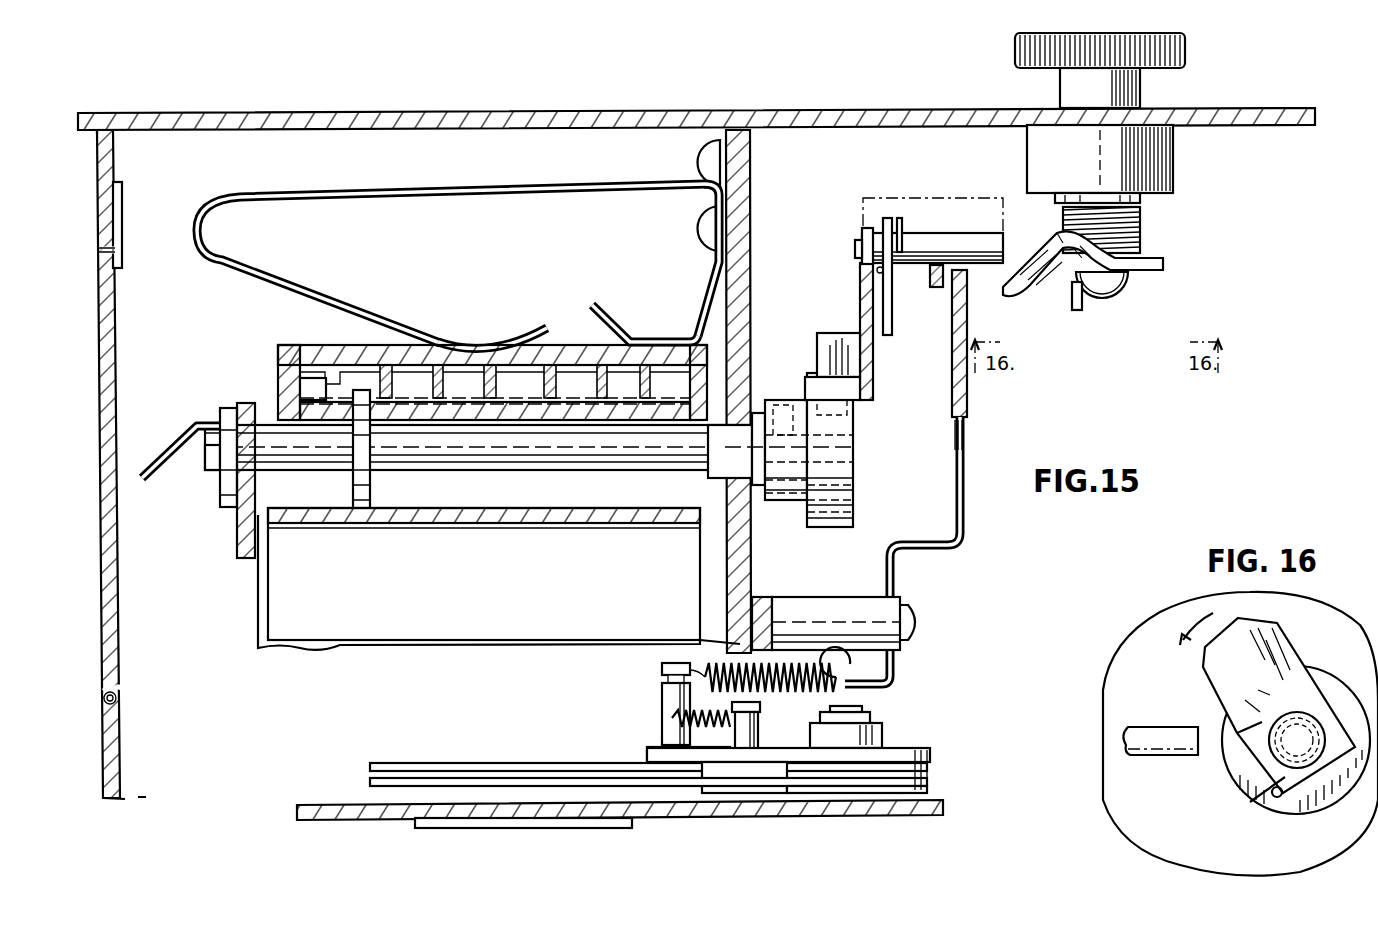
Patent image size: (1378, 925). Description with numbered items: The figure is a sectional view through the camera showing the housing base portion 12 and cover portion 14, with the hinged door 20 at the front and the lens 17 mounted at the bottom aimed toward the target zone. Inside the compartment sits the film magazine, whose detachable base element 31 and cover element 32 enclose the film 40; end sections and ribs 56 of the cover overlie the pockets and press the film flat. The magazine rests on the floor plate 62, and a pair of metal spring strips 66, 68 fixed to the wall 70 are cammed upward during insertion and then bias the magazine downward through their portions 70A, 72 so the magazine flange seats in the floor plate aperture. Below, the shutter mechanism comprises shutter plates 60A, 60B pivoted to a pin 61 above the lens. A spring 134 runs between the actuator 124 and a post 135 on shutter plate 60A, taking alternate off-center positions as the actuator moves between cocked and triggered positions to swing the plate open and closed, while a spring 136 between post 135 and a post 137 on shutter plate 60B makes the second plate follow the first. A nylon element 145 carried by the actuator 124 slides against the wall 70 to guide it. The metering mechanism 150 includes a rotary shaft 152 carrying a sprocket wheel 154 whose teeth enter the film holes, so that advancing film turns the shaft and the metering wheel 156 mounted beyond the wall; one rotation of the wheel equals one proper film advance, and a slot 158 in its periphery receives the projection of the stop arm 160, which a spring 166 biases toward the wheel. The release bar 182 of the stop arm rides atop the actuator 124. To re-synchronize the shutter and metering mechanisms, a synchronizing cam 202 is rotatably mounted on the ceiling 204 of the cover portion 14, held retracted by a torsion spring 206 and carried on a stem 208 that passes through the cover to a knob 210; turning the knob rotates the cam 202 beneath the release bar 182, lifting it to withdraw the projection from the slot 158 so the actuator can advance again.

In FIG. 15, the base portion 12 is at (96, 211).
In FIG. 15, the cover portion 14 is at (560, 106).
In FIG. 15, the lens 17 is at (642, 820).
In FIG. 15, the hinged door 20 is at (100, 476).
In FIG. 15, the base element 31 is at (314, 348).
In FIG. 15, the cover element 32 is at (282, 372).
In FIG. 15, the film 40 is at (507, 440).
In FIG. 15, the cover end sections and ribs 56 is at (548, 382).
In FIG. 15, the shutter plate 60A is at (372, 766).
In FIG. 15, the shutter plate 60B is at (372, 782).
In FIG. 15, the pin 61 is at (852, 712).
In FIG. 15, the floor plate 62 is at (203, 420).
In FIG. 15, the spring strip 66 is at (560, 184).
In FIG. 15, the spring strip 68 is at (712, 285).
In FIG. 15, the wall 70 is at (745, 156).
In FIG. 15, the spring strip portion 70A is at (500, 344).
In FIG. 15, the spring strip portion 72 is at (664, 338).
In FIG. 15, the actuator 124 is at (962, 408).
In FIG. 15, the spring 134 is at (708, 662).
In FIG. 15, the post 135 is at (672, 706).
In FIG. 15, the spring 136 is at (692, 728).
In FIG. 15, the post 137 is at (760, 740).
In FIG. 15, the nylon element 145 is at (843, 604).
In FIG. 15, the metering mechanism 150 is at (208, 514).
In FIG. 15, the rotary shaft 152 is at (594, 442).
In FIG. 15, the sprocket wheel 154 is at (372, 474).
In FIG. 15, the metering wheel 156 is at (848, 480).
In FIG. 15, the slot 158 is at (850, 412).
In FIG. 15, the stop arm 160 is at (866, 300).
In FIG. 15, the spring 166 is at (893, 283).
In FIG. 15, the release bar 182 is at (938, 206).
In FIG. 16, the release bar 182 is at (1173, 728).
In FIG. 15, the synchronizing cam 202 is at (1010, 290).
In FIG. 16, the synchronizing cam 202 is at (1280, 634).
In FIG. 15, the ceiling 204 is at (1232, 128).
In FIG. 16, the ceiling 204 is at (1163, 683).
In FIG. 15, the torsion spring 206 is at (1142, 222).
In FIG. 16, the torsion spring 206 is at (1274, 800).
In FIG. 15, the stem 208 is at (1132, 282).
In FIG. 15, the knob 210 is at (1015, 47).